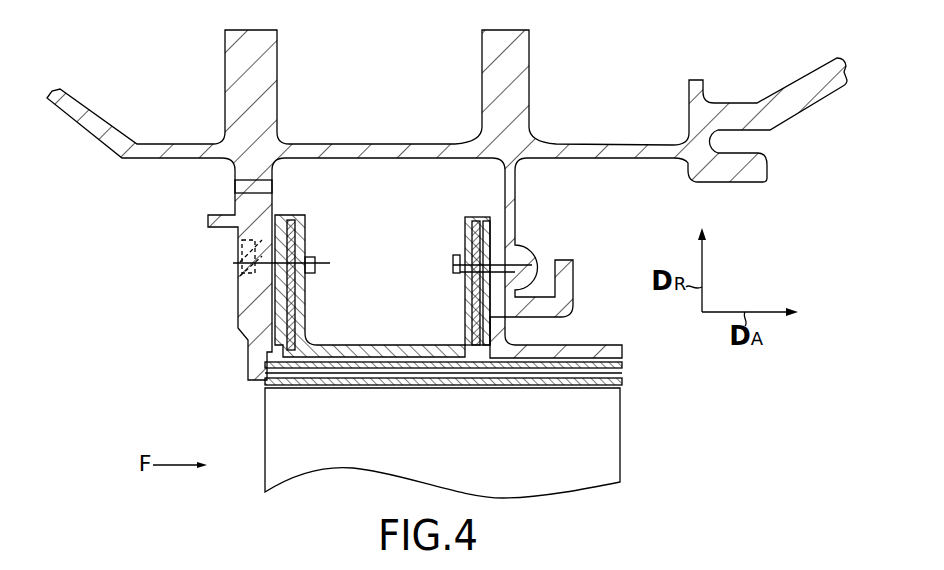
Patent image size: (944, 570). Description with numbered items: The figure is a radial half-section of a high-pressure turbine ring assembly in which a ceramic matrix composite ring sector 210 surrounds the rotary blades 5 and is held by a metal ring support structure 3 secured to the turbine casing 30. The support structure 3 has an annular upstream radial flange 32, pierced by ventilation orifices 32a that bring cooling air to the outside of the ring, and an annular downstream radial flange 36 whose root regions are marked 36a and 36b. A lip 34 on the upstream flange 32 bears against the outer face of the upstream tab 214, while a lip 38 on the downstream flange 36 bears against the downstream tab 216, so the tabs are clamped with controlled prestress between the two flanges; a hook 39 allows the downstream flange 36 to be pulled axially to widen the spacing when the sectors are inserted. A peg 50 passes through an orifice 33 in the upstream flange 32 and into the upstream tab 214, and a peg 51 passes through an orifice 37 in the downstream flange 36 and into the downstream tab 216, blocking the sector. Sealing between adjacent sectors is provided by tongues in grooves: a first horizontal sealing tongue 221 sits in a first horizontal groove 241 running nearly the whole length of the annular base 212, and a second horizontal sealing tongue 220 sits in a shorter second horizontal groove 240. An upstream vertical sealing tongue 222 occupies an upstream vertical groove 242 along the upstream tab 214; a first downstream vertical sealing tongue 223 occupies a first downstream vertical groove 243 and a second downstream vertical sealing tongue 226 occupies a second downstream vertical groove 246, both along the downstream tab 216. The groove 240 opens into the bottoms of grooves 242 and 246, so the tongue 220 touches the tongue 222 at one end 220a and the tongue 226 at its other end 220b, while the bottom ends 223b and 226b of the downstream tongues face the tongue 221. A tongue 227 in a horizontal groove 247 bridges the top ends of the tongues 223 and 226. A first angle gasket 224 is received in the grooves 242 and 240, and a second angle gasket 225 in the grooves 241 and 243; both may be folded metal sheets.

The ring support structure 3 is at (368, 49).
The rotary blades 5 is at (430, 466).
The turbine casing 30 is at (263, 70).
The annular upstream radial flange 32 is at (208, 220).
The ventilation orifices 32a is at (243, 183).
The orifice 33 is at (242, 300).
The lip 34 is at (252, 356).
The annular downstream radial flange 36 is at (516, 217).
The fillet 36a is at (517, 168).
The fillet 36b is at (498, 172).
The orifice 37 is at (518, 244).
The lip 38 is at (522, 296).
The hook 39 is at (572, 290).
The peg 50 is at (293, 256).
The peg 51 is at (453, 265).
The horizontal portion 210 is at (340, 345).
The annular base 212 is at (613, 377).
The upstream tab 214 is at (297, 216).
The downstream tab 216 is at (468, 222).
The second horizontal sealing tongue 220 is at (387, 356).
The end 220a is at (292, 387).
The other end 220b is at (446, 368).
The first horizontal sealing tongue 221 is at (600, 366).
The upstream vertical sealing tongue 222 is at (296, 283).
The first downstream vertical sealing tongue 223 is at (505, 208).
The bottom end 223b is at (489, 372).
The first angle gasket 224 is at (332, 369).
The second angle gasket 225 is at (537, 386).
The second downstream vertical sealing tongue 226 is at (466, 286).
The bottom end 226b is at (469, 343).
The tongue 227 is at (478, 216).
The second horizontal groove 240 is at (393, 380).
The first horizontal groove 241 is at (592, 386).
The upstream vertical groove 242 is at (241, 331).
The first downstream vertical groove 243 is at (496, 324).
The second downstream vertical groove 246 is at (467, 240).
The horizontal groove 247 is at (466, 225).